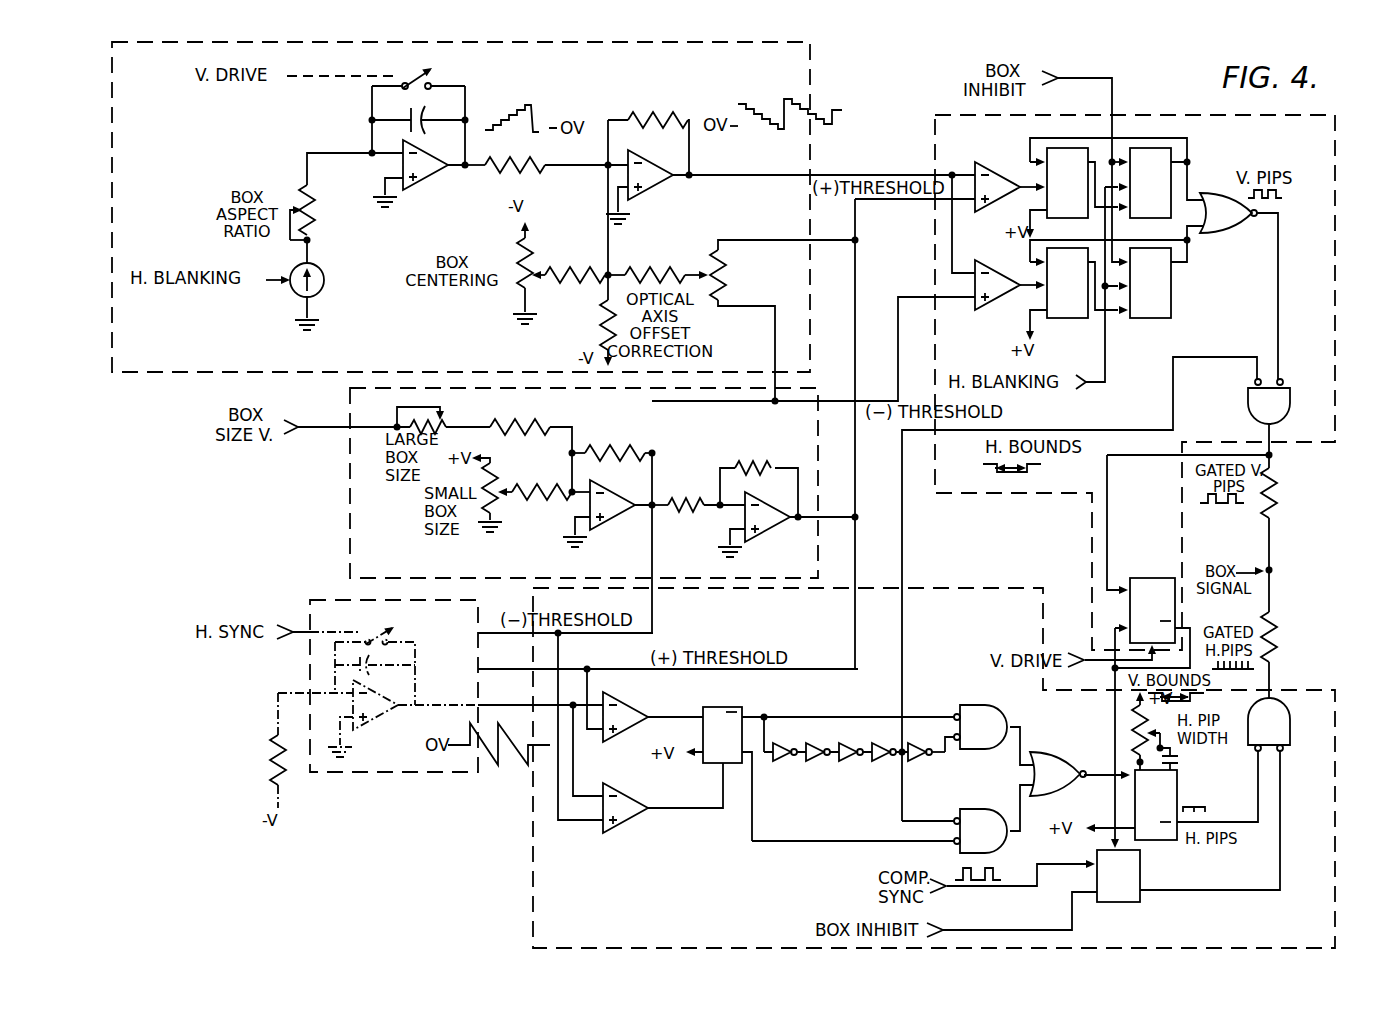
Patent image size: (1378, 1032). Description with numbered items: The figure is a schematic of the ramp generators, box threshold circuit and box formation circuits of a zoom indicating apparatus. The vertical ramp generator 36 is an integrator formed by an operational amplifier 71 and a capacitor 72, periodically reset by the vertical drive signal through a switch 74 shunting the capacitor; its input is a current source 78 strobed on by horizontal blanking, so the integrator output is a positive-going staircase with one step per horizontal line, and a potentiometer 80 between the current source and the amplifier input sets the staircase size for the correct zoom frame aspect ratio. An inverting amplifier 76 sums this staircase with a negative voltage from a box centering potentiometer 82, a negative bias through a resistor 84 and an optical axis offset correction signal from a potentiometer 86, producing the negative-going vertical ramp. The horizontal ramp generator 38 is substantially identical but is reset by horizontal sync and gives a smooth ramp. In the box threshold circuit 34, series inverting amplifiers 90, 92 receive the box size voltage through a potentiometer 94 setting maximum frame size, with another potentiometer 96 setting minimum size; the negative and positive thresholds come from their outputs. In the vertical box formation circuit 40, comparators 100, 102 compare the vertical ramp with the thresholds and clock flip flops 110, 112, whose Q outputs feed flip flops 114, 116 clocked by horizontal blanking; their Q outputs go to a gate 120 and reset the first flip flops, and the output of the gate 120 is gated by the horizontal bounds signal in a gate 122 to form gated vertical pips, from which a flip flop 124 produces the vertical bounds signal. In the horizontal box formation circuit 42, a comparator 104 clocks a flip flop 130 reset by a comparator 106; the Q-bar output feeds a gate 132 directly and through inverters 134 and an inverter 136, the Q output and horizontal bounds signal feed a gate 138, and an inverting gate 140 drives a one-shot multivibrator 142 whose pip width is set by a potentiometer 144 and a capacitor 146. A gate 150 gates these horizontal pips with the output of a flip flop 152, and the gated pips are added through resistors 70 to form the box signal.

The box threshold circuit 34 is at (348, 518).
The vertical ramp generator 36 is at (180, 378).
The horizontal ramp generator 38 is at (345, 772).
The vertical box formation circuit 40 is at (1332, 294).
The horizontal box formation circuit 42 is at (533, 897).
The resistors 70 is at (1281, 485).
The operational amplifier 71 is at (425, 183).
The capacitor 72 is at (412, 114).
The switch 74 is at (413, 70).
The inverting amplifier 76 is at (645, 187).
The current source 78 is at (322, 288).
The potentiometer 80 is at (318, 218).
The box centering potentiometer 82 is at (520, 242).
The resistor 84 is at (604, 318).
The optical axis offset correction potentiometer 86 is at (732, 262).
The inverting amplifier 90 is at (610, 528).
The inverting amplifier 92 is at (767, 528).
The potentiometer 94 is at (442, 424).
The potentiometer 96 is at (494, 474).
The comparator 100 is at (1005, 168).
The comparator 102 is at (995, 308).
The comparator 104 is at (641, 711).
The comparator 106 is at (629, 822).
The flip flop 110 is at (1073, 148).
The flip flop 112 is at (1073, 320).
The flip flop 114 is at (1158, 148).
The flip flop 116 is at (1172, 306).
The gate 120 is at (1226, 231).
The gate 122 is at (1293, 400).
The flip flop 124 is at (1152, 578).
The flip flop 130 is at (728, 708).
The gate 132 is at (986, 708).
The inverters 134 is at (885, 763).
The inverter 136 is at (907, 764).
The gate 138 is at (982, 809).
The inverting gate 140 is at (1068, 742).
The one-shot multivibrator 142 is at (1165, 841).
The potentiometer 144 is at (1136, 738).
The capacitor 146 is at (1180, 763).
The gate 150 is at (1290, 730).
The flip flop 152 is at (1123, 903).